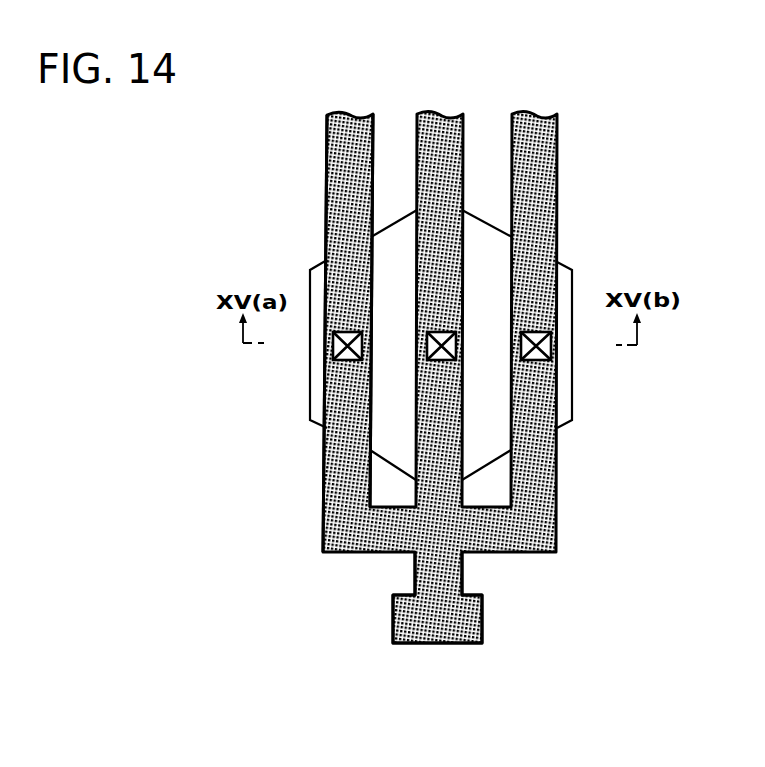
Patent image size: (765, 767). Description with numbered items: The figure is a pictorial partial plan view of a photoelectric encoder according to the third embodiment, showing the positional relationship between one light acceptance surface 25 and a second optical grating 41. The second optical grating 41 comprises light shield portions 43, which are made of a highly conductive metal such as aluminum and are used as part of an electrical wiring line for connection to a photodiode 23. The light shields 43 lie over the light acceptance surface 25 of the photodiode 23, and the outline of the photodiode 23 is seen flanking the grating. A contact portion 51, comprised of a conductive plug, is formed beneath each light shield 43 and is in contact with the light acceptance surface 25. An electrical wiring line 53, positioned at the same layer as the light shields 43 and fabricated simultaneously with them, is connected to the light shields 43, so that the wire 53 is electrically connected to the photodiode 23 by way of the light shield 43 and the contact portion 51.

The second optical grating 41 is at (577, 100).
The light shield portion 43 is at (327, 173).
The light acceptance surface 25 is at (490, 277).
The photodiode 23 is at (577, 270).
The contact portion 51 is at (333, 348).
The electrical wiring line 53 is at (449, 575).